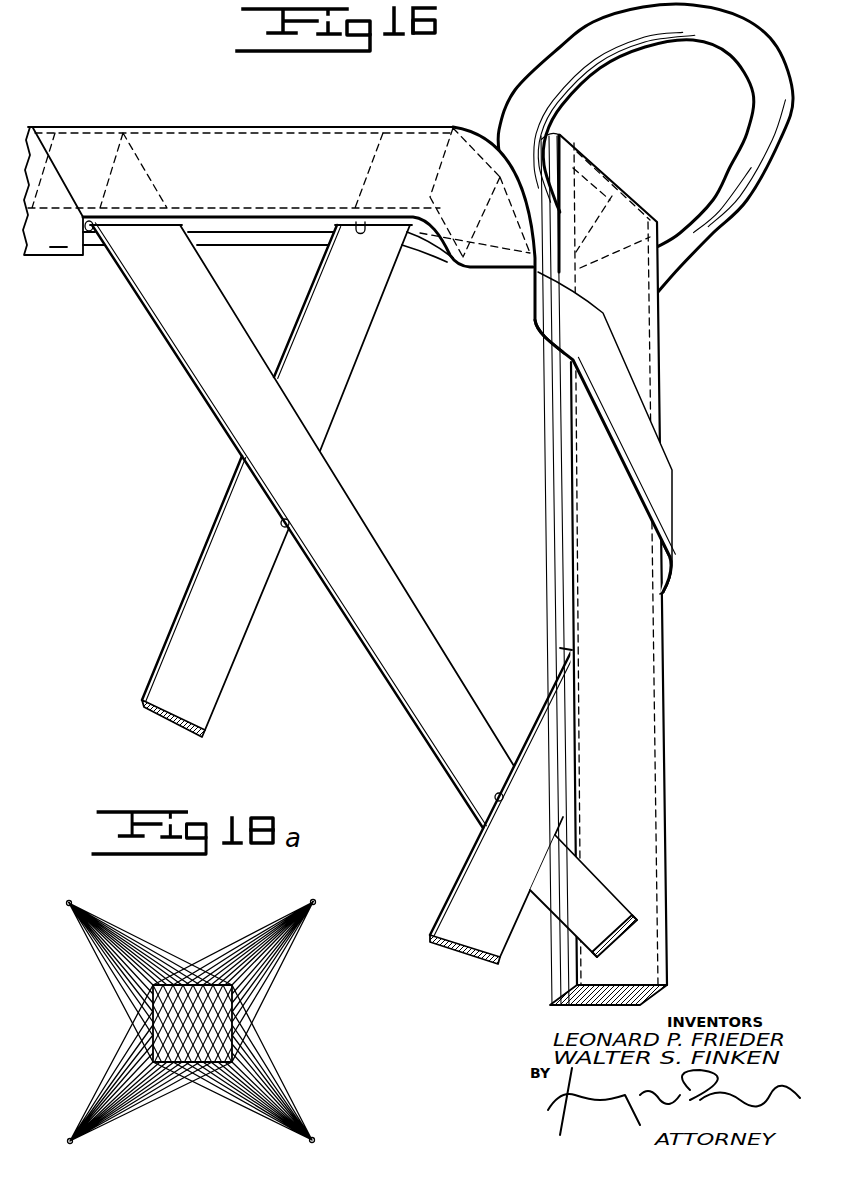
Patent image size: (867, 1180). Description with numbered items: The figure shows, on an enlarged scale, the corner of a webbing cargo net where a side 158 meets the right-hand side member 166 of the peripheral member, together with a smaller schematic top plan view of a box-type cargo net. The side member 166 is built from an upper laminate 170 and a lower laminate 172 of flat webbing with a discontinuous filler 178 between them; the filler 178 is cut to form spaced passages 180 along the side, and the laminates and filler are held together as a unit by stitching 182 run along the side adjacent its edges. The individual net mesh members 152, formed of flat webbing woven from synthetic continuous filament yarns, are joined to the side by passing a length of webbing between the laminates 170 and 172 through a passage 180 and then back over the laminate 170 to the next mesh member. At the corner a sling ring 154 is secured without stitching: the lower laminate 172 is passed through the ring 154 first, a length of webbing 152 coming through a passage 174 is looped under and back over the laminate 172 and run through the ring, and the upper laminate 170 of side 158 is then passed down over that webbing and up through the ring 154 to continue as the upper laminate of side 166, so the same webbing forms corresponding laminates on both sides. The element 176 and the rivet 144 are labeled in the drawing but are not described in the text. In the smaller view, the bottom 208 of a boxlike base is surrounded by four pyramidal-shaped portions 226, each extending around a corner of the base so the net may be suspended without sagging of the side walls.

In FIG. 16, the rivet 144 is at (289, 524).
In FIG. 16, the net mesh member 152 is at (342, 403).
In FIG. 16, the ring 154 is at (713, 248).
In FIG. 16, the side 158 is at (155, 108).
In FIG. 16, the side member 166 is at (641, 710).
In FIG. 16, the upper laminate 170 is at (203, 147).
In FIG. 16, the lower laminate 172 is at (551, 507).
In FIG. 16, the passage 174 is at (199, 224).
In FIG. 16, the web 176 is at (300, 133).
In FIG. 16, the filler 178 is at (560, 556).
In FIG. 16, the passage 180 is at (562, 651).
In FIG. 16, the stitching 182 is at (579, 562).
In FIG. 18A, the bottom 208 is at (218, 1029).
In FIG. 18A, the pyramidal-shaped portion 226 is at (124, 956).